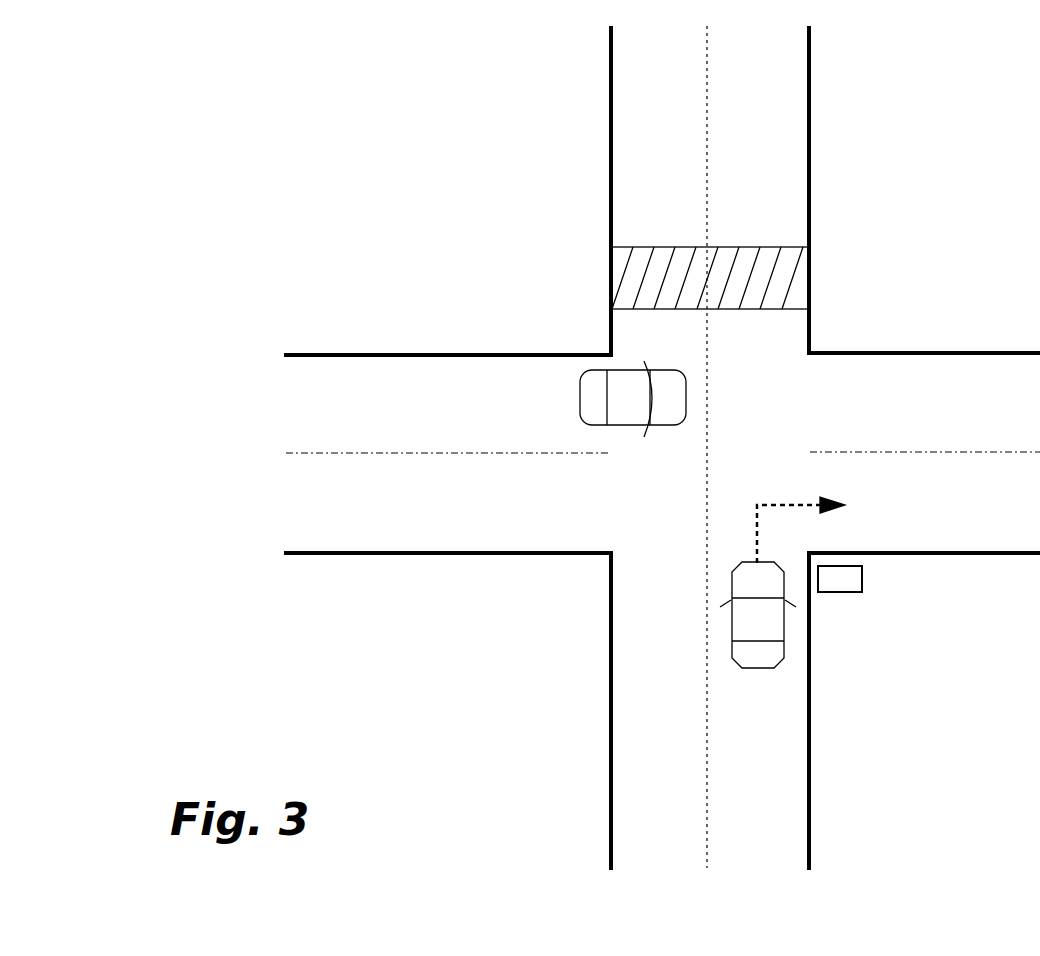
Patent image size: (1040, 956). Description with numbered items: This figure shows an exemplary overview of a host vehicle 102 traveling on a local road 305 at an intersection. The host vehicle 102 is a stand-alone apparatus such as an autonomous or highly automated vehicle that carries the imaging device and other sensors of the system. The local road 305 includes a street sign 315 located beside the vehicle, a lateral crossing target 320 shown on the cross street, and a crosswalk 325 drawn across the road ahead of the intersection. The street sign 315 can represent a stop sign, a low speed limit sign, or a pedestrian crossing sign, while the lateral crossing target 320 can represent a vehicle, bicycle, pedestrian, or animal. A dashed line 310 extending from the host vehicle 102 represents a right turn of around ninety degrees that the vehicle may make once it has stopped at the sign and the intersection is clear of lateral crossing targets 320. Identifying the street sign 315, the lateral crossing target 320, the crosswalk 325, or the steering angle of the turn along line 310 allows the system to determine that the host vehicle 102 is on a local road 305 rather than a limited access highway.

The local road 305 is at (773, 803).
The crosswalk 325 is at (808, 289).
The lateral crossing target 320 is at (578, 398).
The line 310 is at (792, 502).
The host vehicle 102 is at (765, 670).
The street sign 315 is at (843, 593).